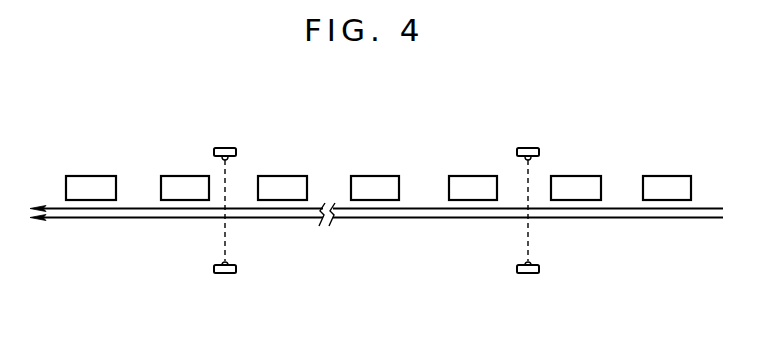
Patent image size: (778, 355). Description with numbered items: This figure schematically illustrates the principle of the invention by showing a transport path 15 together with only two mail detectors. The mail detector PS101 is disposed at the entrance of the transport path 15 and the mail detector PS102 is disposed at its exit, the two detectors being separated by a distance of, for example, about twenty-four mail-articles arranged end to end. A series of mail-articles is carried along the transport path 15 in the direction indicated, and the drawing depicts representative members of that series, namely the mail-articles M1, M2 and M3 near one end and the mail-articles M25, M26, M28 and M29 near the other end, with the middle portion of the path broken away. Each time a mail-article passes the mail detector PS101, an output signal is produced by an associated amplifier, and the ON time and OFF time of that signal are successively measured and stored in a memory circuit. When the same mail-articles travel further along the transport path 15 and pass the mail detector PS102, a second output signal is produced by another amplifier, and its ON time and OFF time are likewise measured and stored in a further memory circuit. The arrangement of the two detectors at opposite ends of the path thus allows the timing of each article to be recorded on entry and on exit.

The transport path 15 is at (408, 217).
The mail-article M1 is at (84, 182).
The mail-article M2 is at (179, 182).
The mail-article M3 is at (282, 182).
The mail-article M25 is at (367, 182).
The mail-article M26 is at (471, 182).
The mail-article M28 is at (582, 182).
The mail-article M29 is at (660, 182).
The mail detector PS101 is at (531, 275).
The mail detector PS102 is at (228, 275).